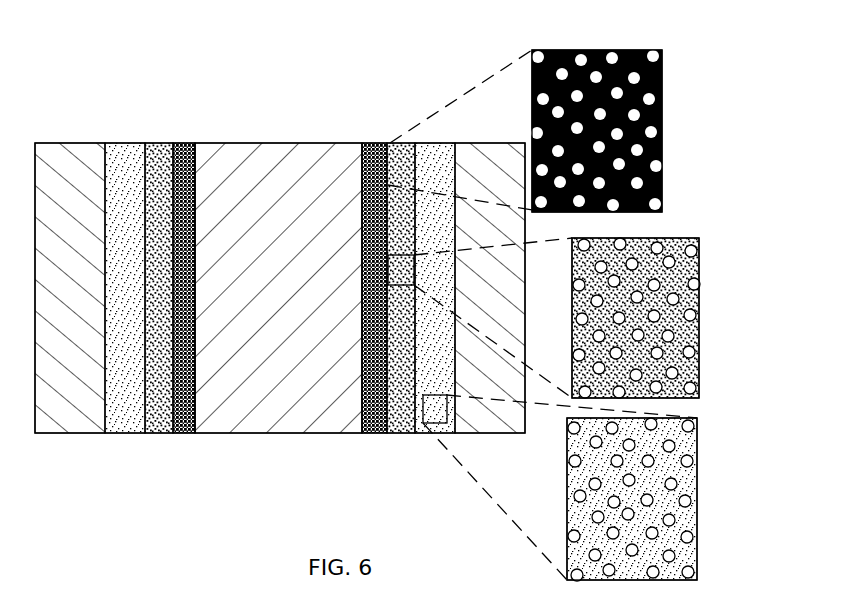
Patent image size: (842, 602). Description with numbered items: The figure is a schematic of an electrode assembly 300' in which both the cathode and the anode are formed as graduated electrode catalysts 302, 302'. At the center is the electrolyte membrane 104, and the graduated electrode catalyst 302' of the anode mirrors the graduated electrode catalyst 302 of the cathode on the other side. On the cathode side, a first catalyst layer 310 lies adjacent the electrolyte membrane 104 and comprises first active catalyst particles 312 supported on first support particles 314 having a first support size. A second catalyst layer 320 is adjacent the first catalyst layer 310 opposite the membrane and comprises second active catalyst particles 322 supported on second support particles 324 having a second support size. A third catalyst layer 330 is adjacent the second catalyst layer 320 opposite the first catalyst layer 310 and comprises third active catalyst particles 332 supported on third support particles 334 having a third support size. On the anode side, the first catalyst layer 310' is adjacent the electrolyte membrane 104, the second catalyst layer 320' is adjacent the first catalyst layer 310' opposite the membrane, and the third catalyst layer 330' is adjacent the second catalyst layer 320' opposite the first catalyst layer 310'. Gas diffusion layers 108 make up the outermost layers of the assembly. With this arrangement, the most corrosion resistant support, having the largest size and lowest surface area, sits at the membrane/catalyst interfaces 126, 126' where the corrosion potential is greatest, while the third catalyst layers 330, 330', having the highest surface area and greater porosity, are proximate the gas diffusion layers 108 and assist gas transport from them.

The electrode assembly 300' is at (289, 266).
The gas diffusion layers 108 is at (50, 412).
The electrolyte membrane 104 is at (263, 413).
The membrane/catalyst interface 126 is at (340, 253).
The membrane/catalyst interface 126' is at (221, 253).
The graduated electrode catalyst 302 is at (401, 301).
The graduated electrode catalyst 302' is at (166, 301).
The first catalyst layer 310 is at (358, 321).
The first catalyst layer 310' is at (205, 321).
The first active catalyst particles 312 is at (662, 102).
The first support particles 314 is at (662, 62).
The second catalyst layer 320 is at (402, 321).
The second catalyst layer 320' is at (167, 321).
The second active catalyst particles 322 is at (670, 250).
The second support particles 324 is at (683, 372).
The third catalyst layer 330 is at (443, 321).
The third catalyst layer 330' is at (120, 321).
The third active catalyst particles 332 is at (647, 473).
The third support particles 334 is at (677, 518).